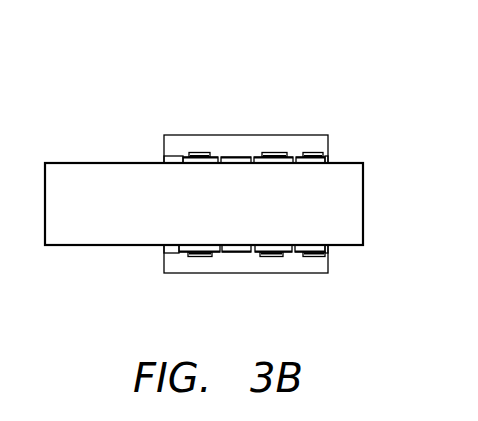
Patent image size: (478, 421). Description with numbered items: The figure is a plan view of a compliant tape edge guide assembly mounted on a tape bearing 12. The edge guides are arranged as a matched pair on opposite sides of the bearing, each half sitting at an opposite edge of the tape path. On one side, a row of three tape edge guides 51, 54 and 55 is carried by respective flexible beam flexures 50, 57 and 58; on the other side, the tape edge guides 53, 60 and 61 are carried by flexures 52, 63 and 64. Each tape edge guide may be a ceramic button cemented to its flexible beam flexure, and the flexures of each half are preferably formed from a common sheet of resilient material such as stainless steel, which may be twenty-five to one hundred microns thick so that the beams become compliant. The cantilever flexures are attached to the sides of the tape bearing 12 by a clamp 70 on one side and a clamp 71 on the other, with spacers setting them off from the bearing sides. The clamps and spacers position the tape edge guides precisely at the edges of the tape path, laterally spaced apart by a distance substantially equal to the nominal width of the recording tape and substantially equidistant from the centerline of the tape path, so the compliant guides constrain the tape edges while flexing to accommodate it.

The tape bearing 12 is at (363, 203).
The clamp 70 is at (216, 135).
The clamp 71 is at (216, 273).
The tape edge guide 55 is at (181, 157).
The flexure 58 is at (203, 153).
The tape edge guide 54 is at (251, 157).
The flexure 57 is at (275, 153).
The flexure 50 is at (312, 153).
The tape edge guide 51 is at (330, 157).
The tape edge guide 61 is at (178, 252).
The flexure 64 is at (203, 257).
The tape edge guide 60 is at (245, 257).
The flexure 63 is at (275, 257).
The flexure 52 is at (313, 257).
The tape edge guide 53 is at (329, 252).